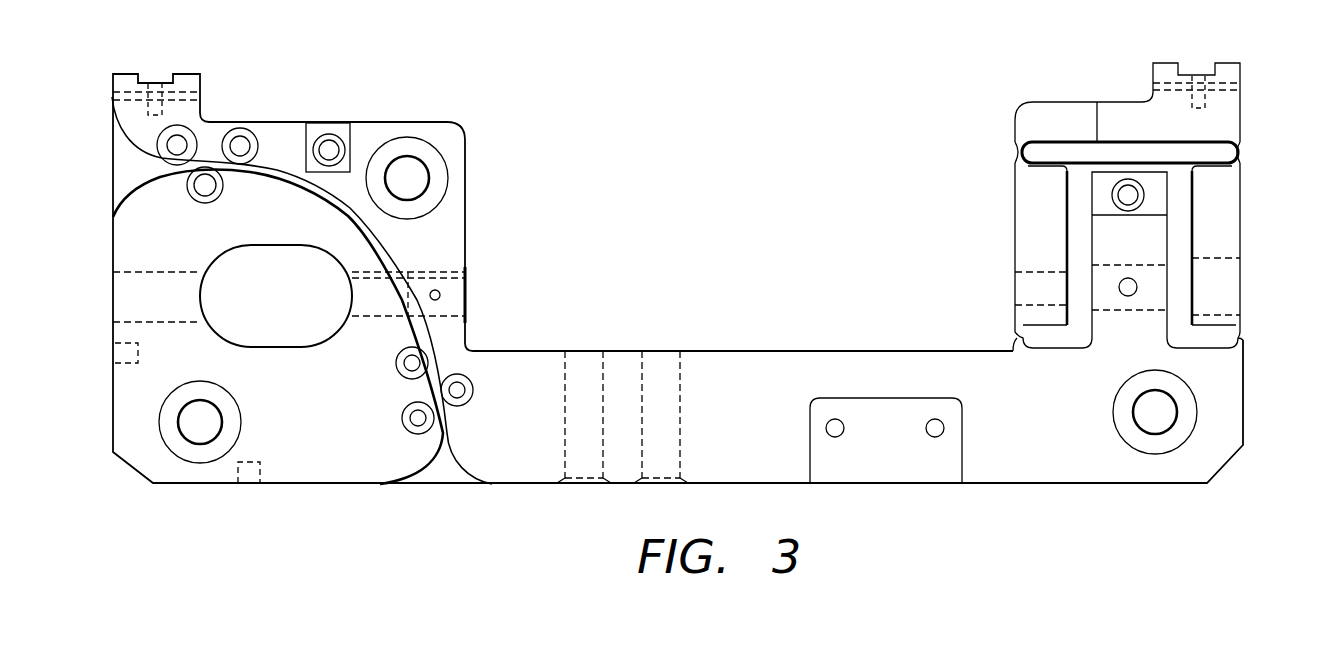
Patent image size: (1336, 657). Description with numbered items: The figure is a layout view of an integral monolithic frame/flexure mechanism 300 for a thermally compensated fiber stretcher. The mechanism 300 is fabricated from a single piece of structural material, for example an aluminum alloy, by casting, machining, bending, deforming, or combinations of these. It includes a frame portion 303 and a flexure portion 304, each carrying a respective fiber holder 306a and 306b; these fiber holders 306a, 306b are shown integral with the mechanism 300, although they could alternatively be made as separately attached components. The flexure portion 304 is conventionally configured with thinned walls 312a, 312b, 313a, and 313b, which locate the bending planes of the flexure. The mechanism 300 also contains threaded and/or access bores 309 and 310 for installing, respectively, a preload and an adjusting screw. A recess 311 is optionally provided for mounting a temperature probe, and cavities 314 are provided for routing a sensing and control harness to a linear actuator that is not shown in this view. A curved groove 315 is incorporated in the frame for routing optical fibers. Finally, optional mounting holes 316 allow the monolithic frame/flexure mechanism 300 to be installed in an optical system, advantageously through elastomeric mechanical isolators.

The integral monolithic frame/flexure mechanism 300 is at (1243, 400).
The frame portion 303 is at (279, 108).
The flexure portion 304 is at (1005, 212).
The fiber holder 306a is at (125, 72).
The fiber holder 306b is at (1163, 63).
The threaded and/or access bore 309 is at (1028, 300).
The threaded and/or access bore 310 is at (112, 314).
The recess 311 is at (888, 477).
The thinned wall 312a is at (1017, 152).
The thinned wall 312b is at (1243, 152).
The thinned wall 313a is at (1013, 347).
The thinned wall 313b is at (1243, 333).
The cavity 314 is at (583, 358).
The curved groove 315 is at (117, 170).
The mounting hole 316 is at (405, 137).